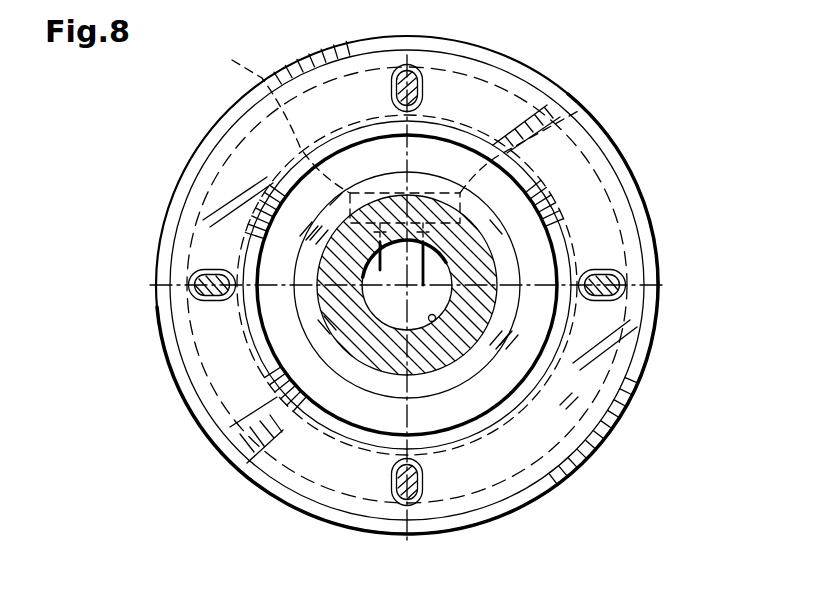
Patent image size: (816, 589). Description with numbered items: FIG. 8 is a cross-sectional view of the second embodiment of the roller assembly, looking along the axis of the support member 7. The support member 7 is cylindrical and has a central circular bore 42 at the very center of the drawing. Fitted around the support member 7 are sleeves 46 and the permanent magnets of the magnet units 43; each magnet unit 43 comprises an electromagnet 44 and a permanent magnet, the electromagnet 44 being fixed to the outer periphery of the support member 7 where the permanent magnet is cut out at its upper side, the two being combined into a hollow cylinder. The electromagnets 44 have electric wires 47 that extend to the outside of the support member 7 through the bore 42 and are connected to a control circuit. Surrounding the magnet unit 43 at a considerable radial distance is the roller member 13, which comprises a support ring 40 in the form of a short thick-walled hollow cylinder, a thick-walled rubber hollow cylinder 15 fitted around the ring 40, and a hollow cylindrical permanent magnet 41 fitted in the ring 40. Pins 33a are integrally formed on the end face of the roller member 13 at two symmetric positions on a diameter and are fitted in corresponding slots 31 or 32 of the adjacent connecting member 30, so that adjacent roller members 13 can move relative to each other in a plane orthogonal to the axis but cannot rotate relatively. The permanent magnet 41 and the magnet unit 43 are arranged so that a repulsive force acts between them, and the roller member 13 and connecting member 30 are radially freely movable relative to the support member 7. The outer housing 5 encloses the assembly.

The housing 5 is at (216, 447).
The support member 7 is at (462, 333).
The roller member 13 is at (127, 428).
The rubber hollow cylinder 15 is at (230, 110).
The connecting member 30 is at (203, 173).
The slot 31 is at (425, 92).
The slot 32 is at (197, 272).
The pin 33a is at (390, 85).
The support ring 40 is at (260, 455).
The permanent magnet 41 is at (327, 427).
The central circular bore 42 is at (433, 322).
The magnet unit 43 is at (226, 63).
The electromagnet 44 is at (575, 133).
The sleeve 46 is at (380, 385).
The electric wire 47 is at (427, 277).